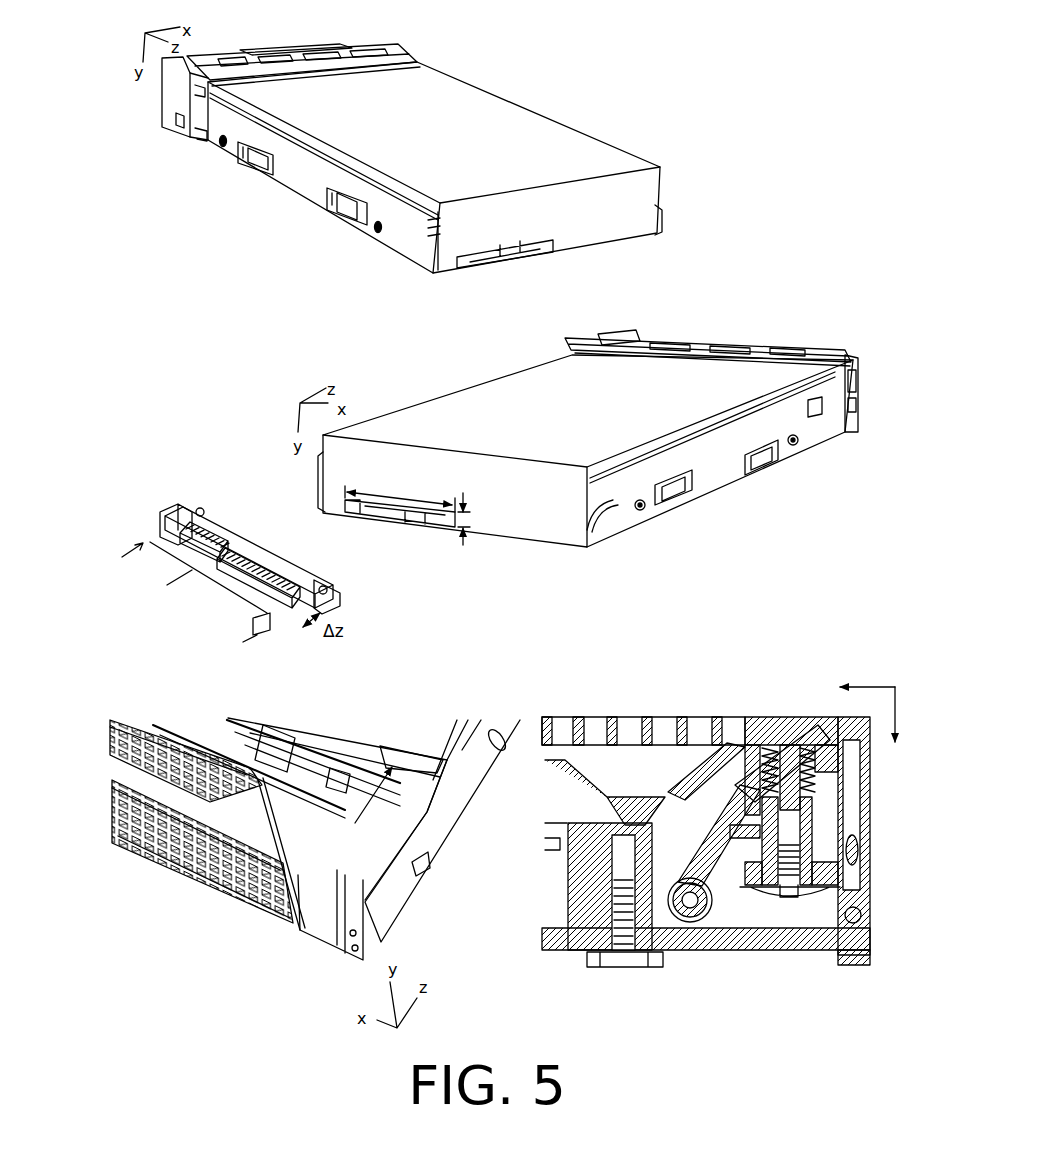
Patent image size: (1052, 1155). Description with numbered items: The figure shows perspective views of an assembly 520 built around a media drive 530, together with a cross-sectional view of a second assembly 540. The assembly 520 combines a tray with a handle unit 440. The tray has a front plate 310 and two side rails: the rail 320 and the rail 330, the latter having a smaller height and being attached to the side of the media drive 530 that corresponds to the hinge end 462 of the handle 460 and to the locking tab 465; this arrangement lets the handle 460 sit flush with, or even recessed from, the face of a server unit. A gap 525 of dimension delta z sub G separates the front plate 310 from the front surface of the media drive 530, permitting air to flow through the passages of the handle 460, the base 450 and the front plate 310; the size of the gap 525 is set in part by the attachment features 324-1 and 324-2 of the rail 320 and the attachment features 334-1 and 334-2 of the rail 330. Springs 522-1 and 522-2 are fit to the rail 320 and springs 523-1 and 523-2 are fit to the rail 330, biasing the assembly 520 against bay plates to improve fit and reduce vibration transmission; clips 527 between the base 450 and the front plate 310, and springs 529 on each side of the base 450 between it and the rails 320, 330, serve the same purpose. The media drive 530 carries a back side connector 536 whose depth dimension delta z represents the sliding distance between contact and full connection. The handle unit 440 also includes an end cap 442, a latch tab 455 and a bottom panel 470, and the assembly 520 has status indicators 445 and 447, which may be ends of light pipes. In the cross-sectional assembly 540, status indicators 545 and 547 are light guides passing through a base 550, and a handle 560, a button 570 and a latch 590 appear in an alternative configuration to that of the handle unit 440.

The front plate 310 is at (408, 50).
The rail 320 is at (207, 137).
The attachment feature 324-1 is at (223, 150).
The attachment feature 324-2 is at (378, 235).
The rail 330 is at (660, 222).
The attachment feature 334-1 is at (795, 448).
The attachment feature 334-2 is at (645, 515).
The handle unit 440 is at (290, 33).
The carrier end cap 442 is at (832, 357).
The status indicator 445 is at (350, 936).
The status indicator 447 is at (353, 951).
The base 450 is at (172, 100).
The latch tab 455 is at (806, 410).
The handle 460 is at (315, 42).
The hinge end 462 is at (856, 376).
The locking tab 465 is at (857, 402).
The bottom panel 470 is at (318, 926).
The assembly 520 is at (593, 92).
The spring 522-1 is at (263, 170).
The spring 522-2 is at (342, 218).
The spring 523-1 is at (760, 465).
The spring 523-2 is at (686, 490).
The gap 525 is at (357, 740).
The clip 527 is at (347, 797).
The spring 529 is at (428, 862).
The media drive 530 is at (521, 481).
The connector 536 is at (527, 228).
The assembly 540 is at (806, 652).
The status indicator 545 is at (867, 842).
The status indicator 547 is at (867, 902).
The base 550 is at (872, 800).
The handle 560 is at (648, 716).
The button 570 is at (790, 717).
The latch 590 is at (708, 905).